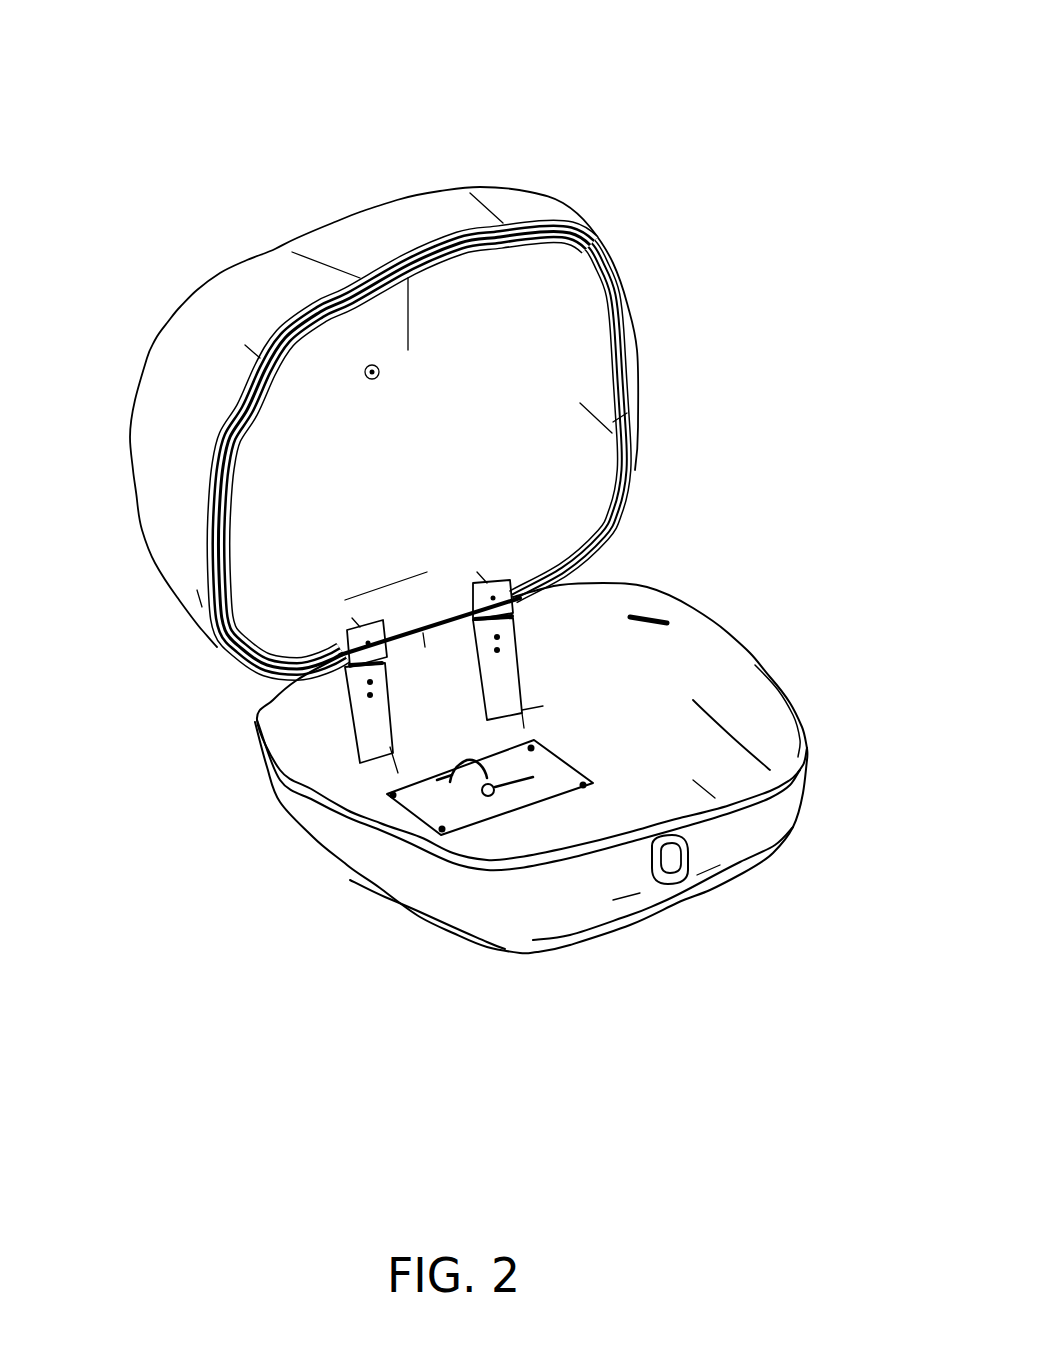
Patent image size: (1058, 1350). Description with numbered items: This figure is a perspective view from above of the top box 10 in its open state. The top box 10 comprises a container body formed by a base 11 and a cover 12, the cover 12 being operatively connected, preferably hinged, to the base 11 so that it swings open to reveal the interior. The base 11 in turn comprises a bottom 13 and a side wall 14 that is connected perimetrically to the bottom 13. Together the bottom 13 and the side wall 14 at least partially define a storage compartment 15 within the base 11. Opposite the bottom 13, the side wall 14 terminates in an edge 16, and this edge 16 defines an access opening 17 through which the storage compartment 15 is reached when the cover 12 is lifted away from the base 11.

The top box 10 is at (688, 125).
The base 11 is at (391, 921).
The cover 12 is at (252, 242).
The bottom 13 is at (630, 784).
The side wall 14 is at (330, 838).
The storage compartment 15 is at (613, 728).
The edge 16 is at (750, 651).
The access opening 17 is at (775, 682).